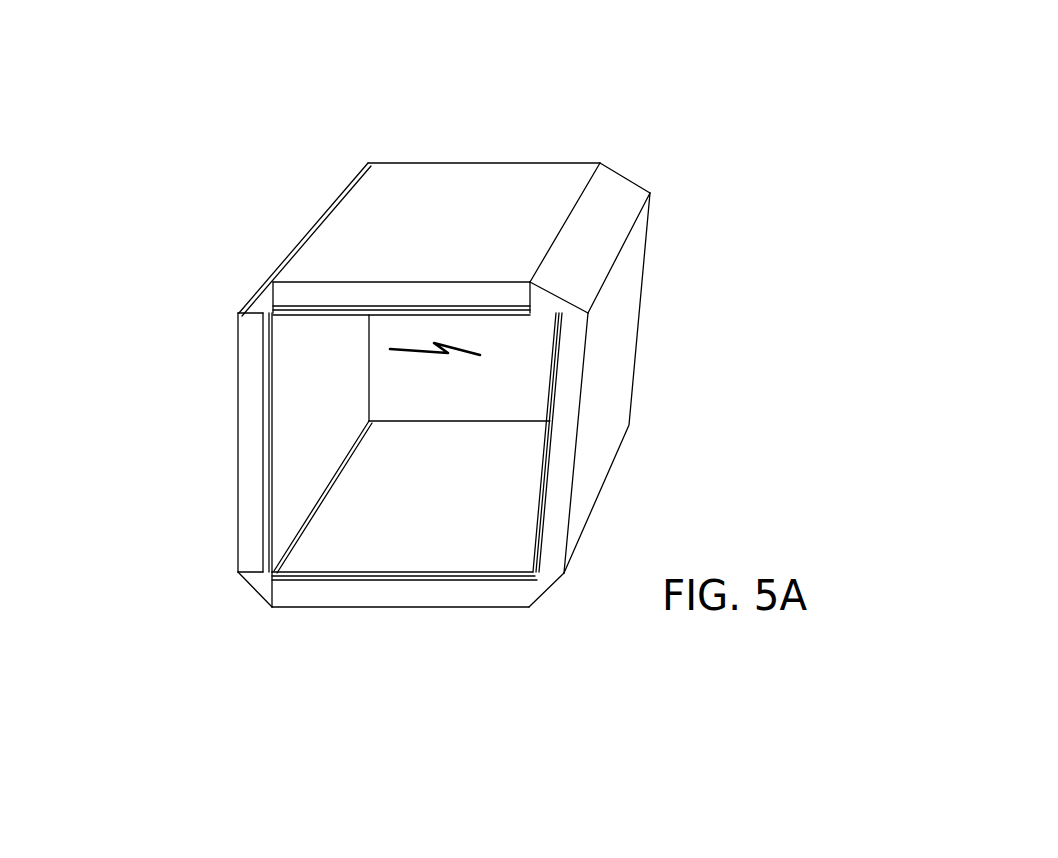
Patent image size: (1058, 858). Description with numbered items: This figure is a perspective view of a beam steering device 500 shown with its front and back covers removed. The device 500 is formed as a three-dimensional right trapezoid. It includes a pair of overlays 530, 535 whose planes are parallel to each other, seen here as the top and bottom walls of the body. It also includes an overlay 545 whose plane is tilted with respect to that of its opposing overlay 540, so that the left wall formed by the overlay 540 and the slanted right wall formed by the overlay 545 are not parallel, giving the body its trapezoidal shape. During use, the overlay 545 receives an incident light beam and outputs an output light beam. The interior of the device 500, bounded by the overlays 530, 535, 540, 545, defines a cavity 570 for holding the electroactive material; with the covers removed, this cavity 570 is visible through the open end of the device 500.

The beam steering device 500 is at (933, 152).
The overlay 530 is at (467, 297).
The overlay 535 is at (368, 597).
The overlay 540 is at (248, 470).
The overlay 545 is at (575, 443).
The cavity 570 is at (432, 342).